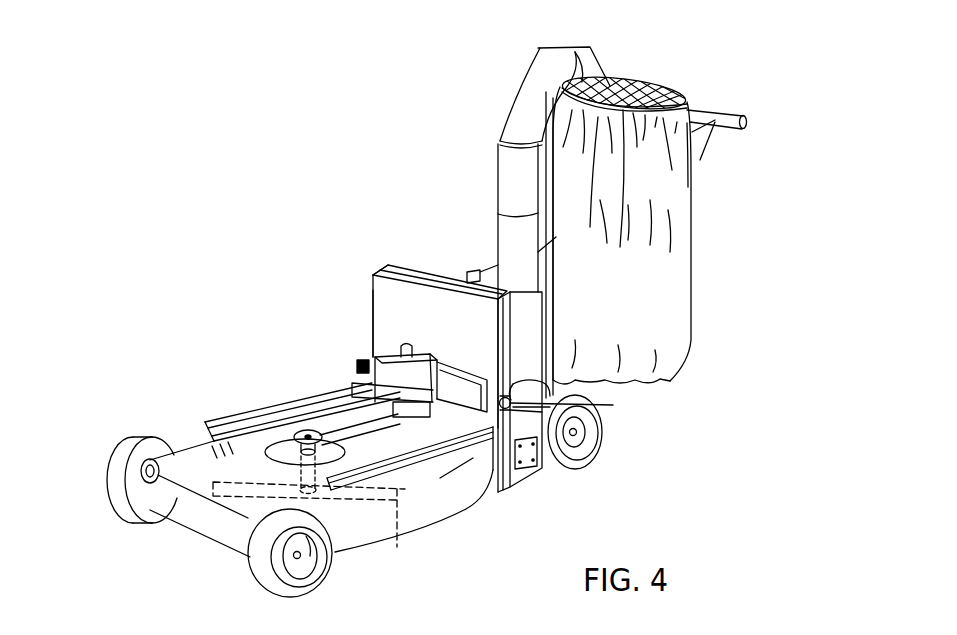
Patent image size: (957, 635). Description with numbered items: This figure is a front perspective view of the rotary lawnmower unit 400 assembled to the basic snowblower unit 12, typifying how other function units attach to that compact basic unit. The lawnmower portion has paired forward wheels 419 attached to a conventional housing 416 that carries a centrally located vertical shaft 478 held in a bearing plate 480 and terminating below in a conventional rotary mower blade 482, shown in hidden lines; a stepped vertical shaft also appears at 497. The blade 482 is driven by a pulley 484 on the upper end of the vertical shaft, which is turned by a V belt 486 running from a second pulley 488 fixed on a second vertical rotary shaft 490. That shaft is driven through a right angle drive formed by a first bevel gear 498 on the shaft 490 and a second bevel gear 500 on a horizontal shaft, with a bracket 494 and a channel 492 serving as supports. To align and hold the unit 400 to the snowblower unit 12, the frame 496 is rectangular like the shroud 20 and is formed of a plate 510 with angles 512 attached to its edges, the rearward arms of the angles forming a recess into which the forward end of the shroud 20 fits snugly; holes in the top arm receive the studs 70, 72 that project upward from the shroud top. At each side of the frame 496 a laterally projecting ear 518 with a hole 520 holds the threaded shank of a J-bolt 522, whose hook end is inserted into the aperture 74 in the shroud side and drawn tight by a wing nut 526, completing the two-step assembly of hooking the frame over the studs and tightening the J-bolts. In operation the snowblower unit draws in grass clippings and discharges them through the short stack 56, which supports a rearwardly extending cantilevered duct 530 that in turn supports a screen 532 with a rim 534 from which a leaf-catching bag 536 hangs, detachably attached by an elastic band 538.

The basic snowblower unit 12 is at (378, 237).
The shroud 20 is at (528, 330).
The short stack 56 is at (502, 237).
The stud 70 is at (505, 284).
The stud 72 is at (424, 241).
The hole 74 is at (530, 392).
The rotary lawnmower unit 400 is at (219, 409).
The housing 416 is at (173, 512).
The wheels 419 is at (110, 477).
The vertical shaft 478 is at (300, 432).
The bearing plate 480 is at (282, 455).
The rotary mower blade 482 is at (398, 540).
The pulley 484 is at (303, 437).
The V belt 486 is at (310, 432).
The second pulley 488 is at (398, 416).
The second vertical rotary shaft 490 is at (374, 350).
The channel 492 is at (373, 340).
The bracket 494 is at (437, 360).
The frame 496 is at (371, 292).
The stepped vertical shaft 497 is at (401, 340).
The first bevel gear 498 is at (437, 355).
The second bevel gear 500 is at (433, 352).
The plate 510 is at (378, 286).
The angles 512 is at (503, 322).
The ear 518 is at (613, 405).
The hole 520 is at (356, 365).
The J-bolt 522 is at (547, 388).
The wing nut 526 is at (588, 404).
The cantilevered duct 530 is at (540, 48).
The screen 532 is at (651, 90).
The rim 534 is at (571, 245).
The leaf-catching bag 536 is at (693, 187).
The elastic band 538 is at (622, 235).